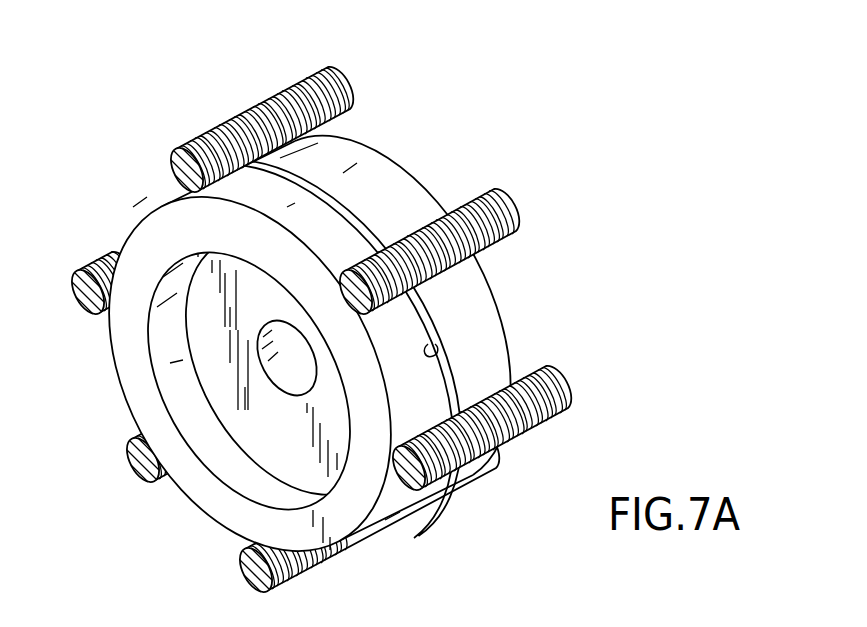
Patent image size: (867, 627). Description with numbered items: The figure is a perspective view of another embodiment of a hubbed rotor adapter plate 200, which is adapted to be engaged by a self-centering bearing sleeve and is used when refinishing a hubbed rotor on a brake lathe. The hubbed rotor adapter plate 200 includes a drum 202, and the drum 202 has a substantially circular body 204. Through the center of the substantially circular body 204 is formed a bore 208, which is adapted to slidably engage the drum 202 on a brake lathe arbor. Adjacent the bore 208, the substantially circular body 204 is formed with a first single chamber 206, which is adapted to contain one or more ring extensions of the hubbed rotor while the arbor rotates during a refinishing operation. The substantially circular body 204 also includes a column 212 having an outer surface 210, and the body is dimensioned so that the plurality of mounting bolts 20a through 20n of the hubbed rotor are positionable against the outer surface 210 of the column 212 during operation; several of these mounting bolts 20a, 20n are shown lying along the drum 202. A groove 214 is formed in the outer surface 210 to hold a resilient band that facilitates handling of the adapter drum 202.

The hubbed rotor adapter plate 200 is at (401, 321).
The drum 202 is at (497, 314).
The substantially circular body 204 is at (337, 548).
The first single chamber 206 is at (240, 474).
The bore 208 is at (287, 380).
The outer surface 210 is at (378, 162).
The column 212 is at (128, 354).
The groove 214 is at (428, 344).
The mounting bolt 20a is at (263, 100).
The mounting bolt 20n is at (500, 190).